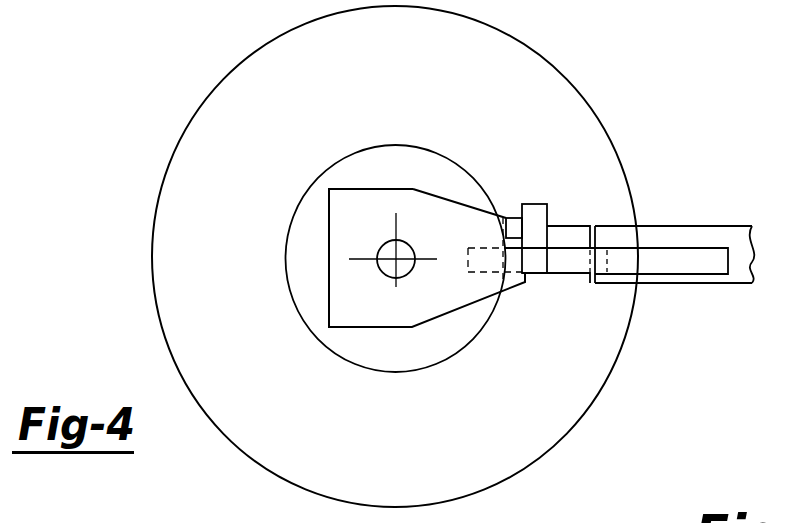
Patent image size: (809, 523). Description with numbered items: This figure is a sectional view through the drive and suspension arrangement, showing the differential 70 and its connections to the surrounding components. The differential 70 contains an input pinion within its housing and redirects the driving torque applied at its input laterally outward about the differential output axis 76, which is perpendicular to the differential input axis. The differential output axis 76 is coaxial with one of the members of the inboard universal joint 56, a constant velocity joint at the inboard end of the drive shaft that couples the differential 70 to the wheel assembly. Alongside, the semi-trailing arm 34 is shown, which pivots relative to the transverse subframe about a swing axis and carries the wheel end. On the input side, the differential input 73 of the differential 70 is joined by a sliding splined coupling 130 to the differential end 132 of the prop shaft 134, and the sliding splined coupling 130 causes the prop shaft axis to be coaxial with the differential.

The semi-trailing arm 34 is at (678, 268).
The inboard universal joint 56 is at (383, 262).
The differential 70 is at (463, 213).
The differential input 73 is at (565, 225).
The differential output axis 76 is at (382, 262).
The sliding splined coupling 130 is at (593, 217).
The differential end 132 is at (608, 225).
The prop shaft 134 is at (710, 225).